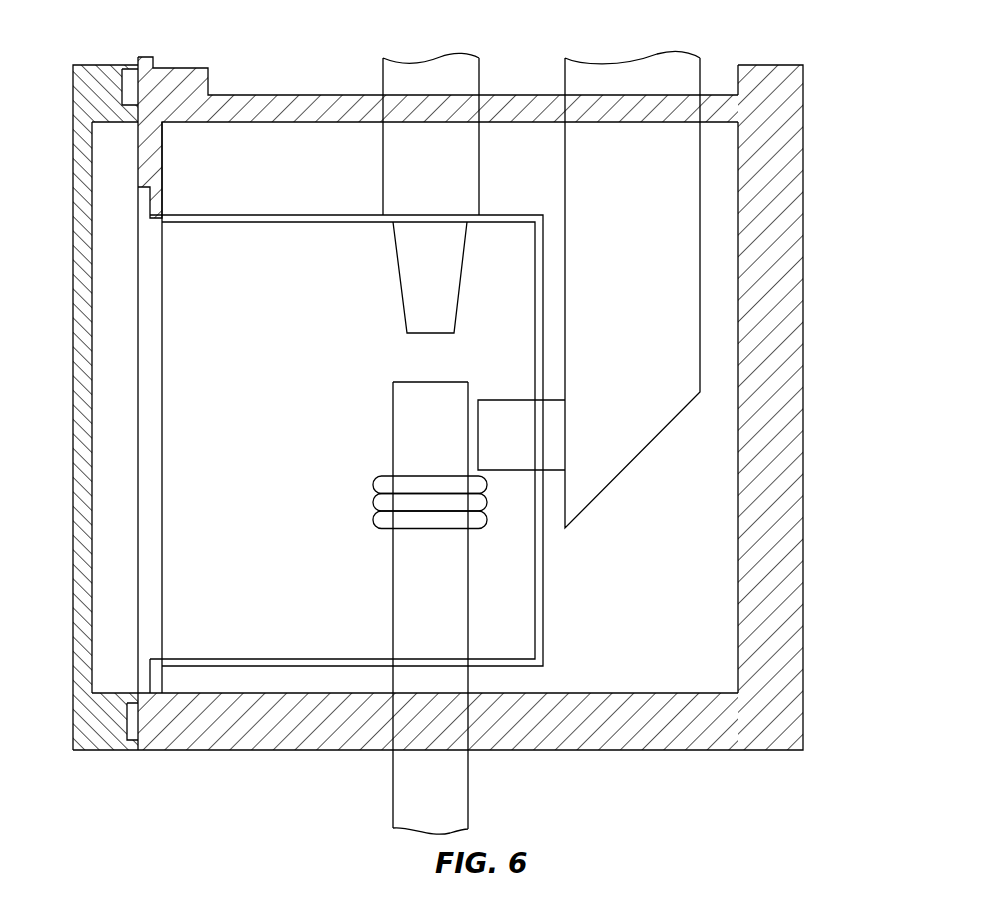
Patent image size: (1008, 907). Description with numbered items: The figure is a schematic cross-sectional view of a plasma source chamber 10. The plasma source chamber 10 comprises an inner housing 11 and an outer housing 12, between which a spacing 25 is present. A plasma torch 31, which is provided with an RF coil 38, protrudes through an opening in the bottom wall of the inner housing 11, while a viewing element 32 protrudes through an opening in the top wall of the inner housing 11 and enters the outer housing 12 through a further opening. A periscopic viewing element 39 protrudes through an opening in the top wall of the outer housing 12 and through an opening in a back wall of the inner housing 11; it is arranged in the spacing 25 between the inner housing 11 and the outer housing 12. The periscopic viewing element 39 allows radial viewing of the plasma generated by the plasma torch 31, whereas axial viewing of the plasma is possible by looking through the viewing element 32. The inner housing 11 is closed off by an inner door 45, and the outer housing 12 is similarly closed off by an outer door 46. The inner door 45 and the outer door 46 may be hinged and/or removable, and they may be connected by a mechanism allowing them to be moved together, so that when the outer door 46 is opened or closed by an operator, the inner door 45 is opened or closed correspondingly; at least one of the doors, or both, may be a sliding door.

The plasma source chamber 10 is at (848, 342).
The inner housing 11 is at (543, 632).
The outer housing 12 is at (803, 588).
The spacing 25 is at (290, 181).
The plasma torch 31 is at (393, 597).
The viewing element 32 is at (383, 80).
The RF coil 38 is at (375, 485).
The periscopic viewing element 39 is at (638, 457).
The inner door 45 is at (138, 437).
The outer door 46 is at (73, 570).